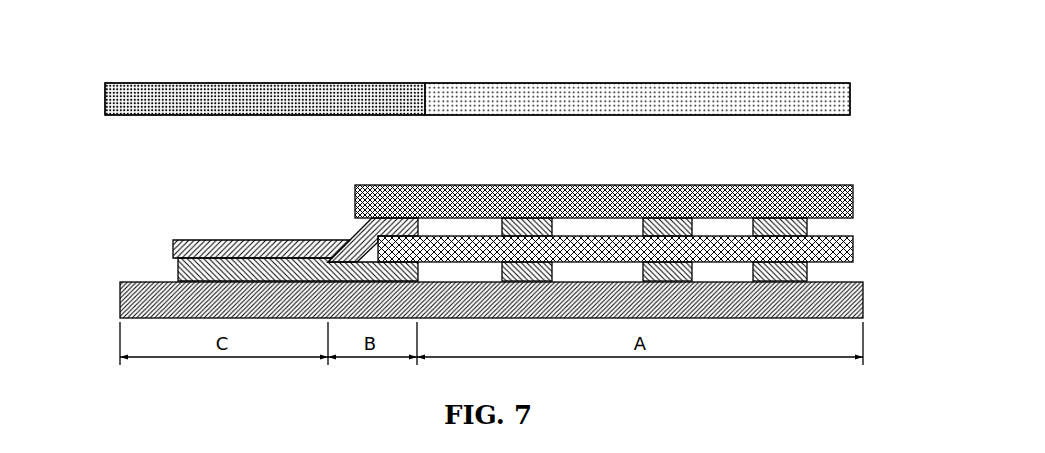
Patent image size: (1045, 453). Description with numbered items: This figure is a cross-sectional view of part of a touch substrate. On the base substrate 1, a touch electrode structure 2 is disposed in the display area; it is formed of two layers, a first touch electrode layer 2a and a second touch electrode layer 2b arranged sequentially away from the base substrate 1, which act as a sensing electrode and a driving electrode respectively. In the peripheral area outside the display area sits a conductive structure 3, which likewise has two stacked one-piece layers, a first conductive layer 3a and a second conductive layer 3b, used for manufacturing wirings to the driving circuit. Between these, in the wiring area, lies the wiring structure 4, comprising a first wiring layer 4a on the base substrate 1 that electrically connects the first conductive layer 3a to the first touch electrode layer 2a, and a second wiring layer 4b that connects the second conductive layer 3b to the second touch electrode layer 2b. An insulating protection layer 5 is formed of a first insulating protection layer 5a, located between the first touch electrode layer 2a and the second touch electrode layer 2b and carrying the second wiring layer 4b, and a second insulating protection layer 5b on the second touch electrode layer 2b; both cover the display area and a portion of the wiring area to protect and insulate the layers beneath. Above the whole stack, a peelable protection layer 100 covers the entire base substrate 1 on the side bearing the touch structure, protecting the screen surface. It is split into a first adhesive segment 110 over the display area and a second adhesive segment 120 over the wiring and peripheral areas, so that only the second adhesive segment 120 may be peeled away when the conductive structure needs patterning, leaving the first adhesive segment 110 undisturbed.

The peelable protection layer 100 is at (523, 68).
The first adhesive segment 110 is at (795, 83).
The second adhesive segment 120 is at (280, 83).
The base substrate 1 is at (852, 302).
The touch electrode structure 2 is at (660, 248).
The first touch electrode layer 2a is at (808, 276).
The second touch electrode layer 2b is at (810, 232).
The conductive structure 3 is at (223, 241).
The first conductive layer 3a is at (178, 279).
The second conductive layer 3b is at (173, 253).
The wiring structure 4 is at (327, 218).
The first wiring layer 4a is at (333, 258).
The second wiring layer 4b is at (352, 242).
The insulating protection layer 5 is at (604, 186).
The first insulating protection layer 5a is at (451, 238).
The second insulating protection layer 5b is at (475, 195).